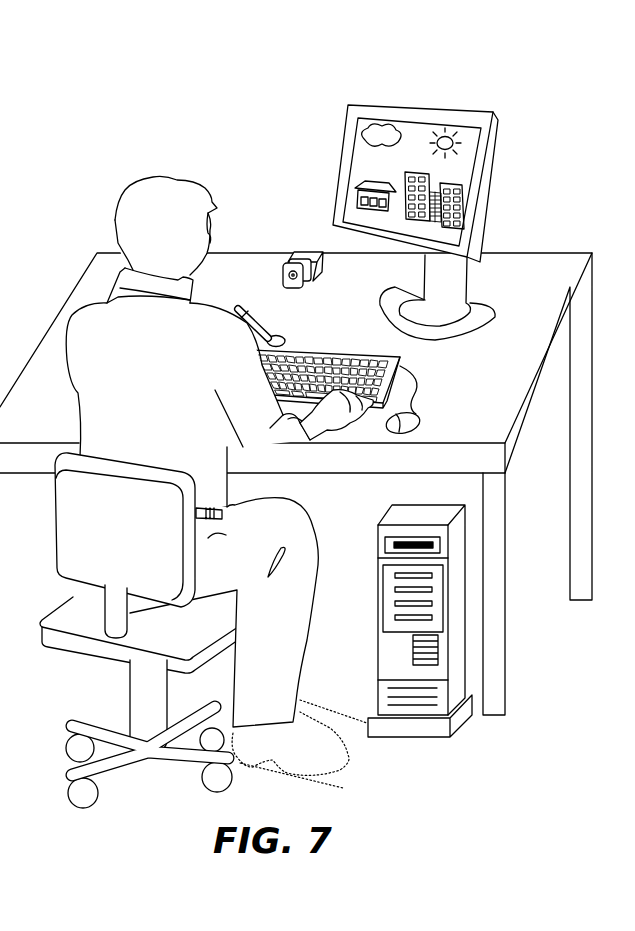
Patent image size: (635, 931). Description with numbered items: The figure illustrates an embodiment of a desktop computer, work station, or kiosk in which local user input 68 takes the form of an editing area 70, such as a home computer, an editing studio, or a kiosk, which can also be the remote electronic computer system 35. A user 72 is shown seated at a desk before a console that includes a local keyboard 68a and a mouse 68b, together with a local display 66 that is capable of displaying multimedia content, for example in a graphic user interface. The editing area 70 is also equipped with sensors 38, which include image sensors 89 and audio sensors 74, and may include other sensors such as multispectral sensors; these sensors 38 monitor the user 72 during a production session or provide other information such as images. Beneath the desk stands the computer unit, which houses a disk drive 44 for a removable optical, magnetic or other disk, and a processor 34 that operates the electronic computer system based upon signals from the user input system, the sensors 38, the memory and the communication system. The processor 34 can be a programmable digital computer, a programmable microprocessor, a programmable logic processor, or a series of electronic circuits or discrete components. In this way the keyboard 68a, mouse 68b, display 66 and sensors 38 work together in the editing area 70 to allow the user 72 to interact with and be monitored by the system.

The processor 34 is at (413, 737).
The remote electronic computer system 35 is at (478, 779).
The sensors 38 is at (298, 251).
The disk drive 44 is at (388, 548).
The local display 66 is at (392, 112).
The local user input 68 is at (462, 208).
The local keyboard 68a is at (350, 348).
The mouse 68b is at (421, 421).
The editing area 70 is at (558, 133).
The user 72 is at (158, 376).
The audio sensors 74 is at (240, 308).
The image sensors 89 is at (281, 263).